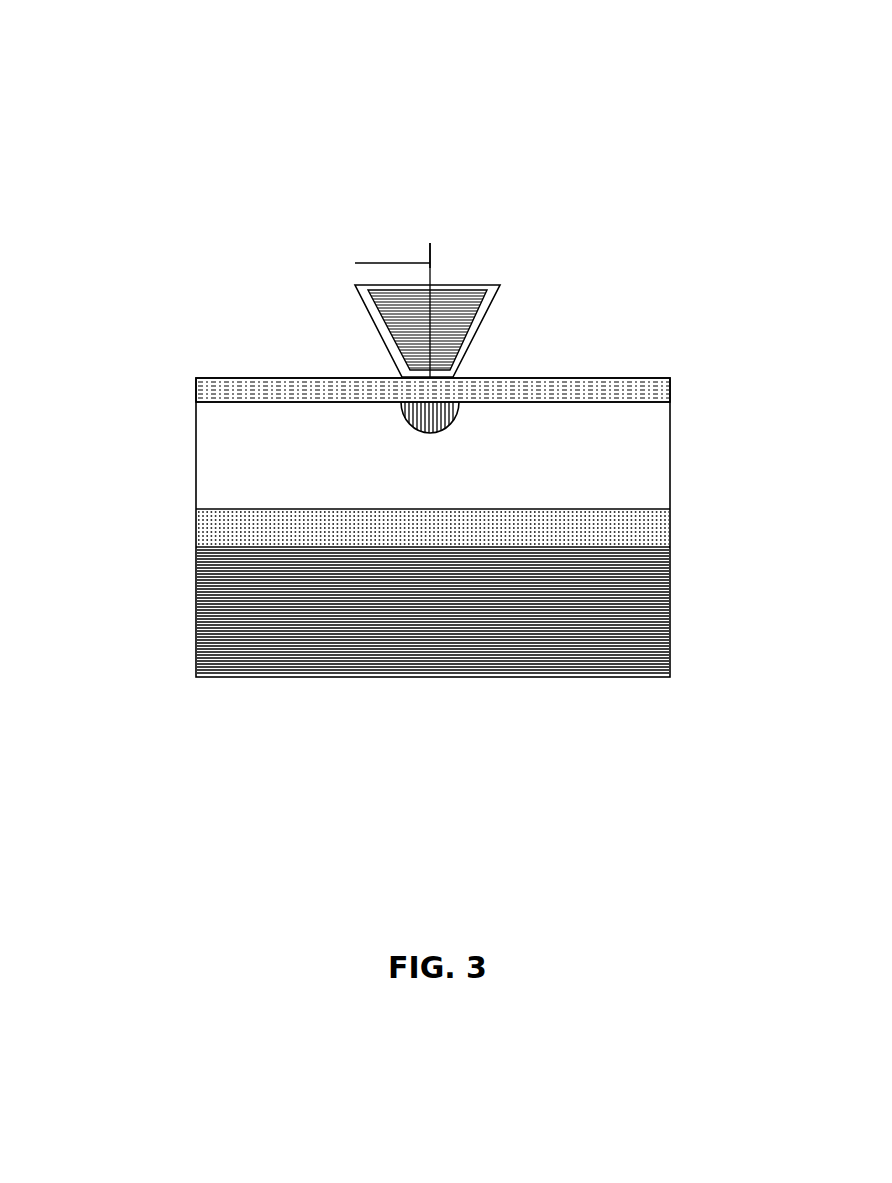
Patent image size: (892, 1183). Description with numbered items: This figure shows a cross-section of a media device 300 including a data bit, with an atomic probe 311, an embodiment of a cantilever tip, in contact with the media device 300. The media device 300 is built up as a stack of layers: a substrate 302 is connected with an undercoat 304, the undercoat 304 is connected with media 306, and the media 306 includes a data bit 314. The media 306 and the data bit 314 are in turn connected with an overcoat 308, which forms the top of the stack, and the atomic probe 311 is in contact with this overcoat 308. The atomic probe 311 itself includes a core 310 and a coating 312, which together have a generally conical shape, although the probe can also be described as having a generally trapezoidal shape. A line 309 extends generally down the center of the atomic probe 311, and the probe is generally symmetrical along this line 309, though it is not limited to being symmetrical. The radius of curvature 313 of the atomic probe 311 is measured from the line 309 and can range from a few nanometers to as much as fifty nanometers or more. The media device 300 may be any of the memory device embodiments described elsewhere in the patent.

The media device 300 is at (204, 760).
The substrate 302 is at (230, 618).
The undercoat 304 is at (210, 535).
The media 306 is at (255, 450).
The overcoat 308 is at (312, 390).
The line 309 is at (446, 242).
The core 310 is at (451, 312).
The atomic probe 311 is at (337, 316).
The coating 312 is at (485, 320).
The radius of curvature 313 is at (370, 229).
The data bit 314 is at (458, 417).